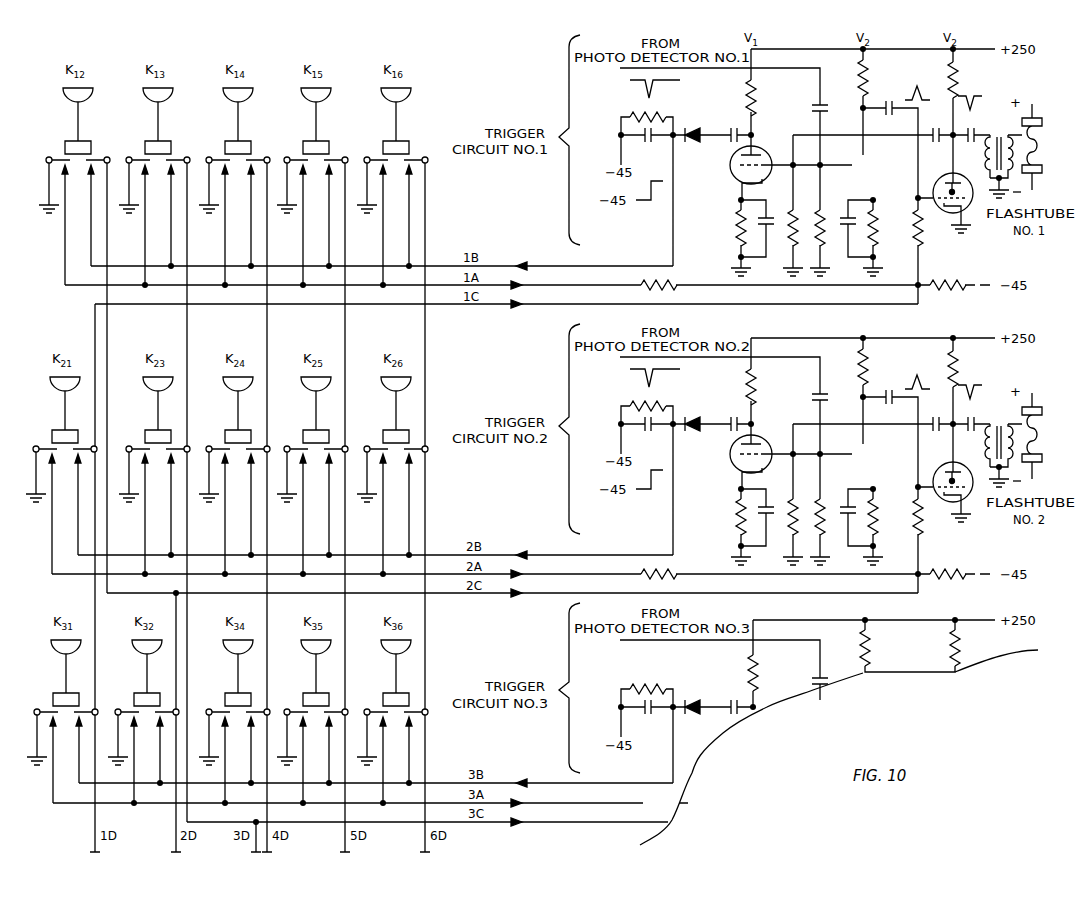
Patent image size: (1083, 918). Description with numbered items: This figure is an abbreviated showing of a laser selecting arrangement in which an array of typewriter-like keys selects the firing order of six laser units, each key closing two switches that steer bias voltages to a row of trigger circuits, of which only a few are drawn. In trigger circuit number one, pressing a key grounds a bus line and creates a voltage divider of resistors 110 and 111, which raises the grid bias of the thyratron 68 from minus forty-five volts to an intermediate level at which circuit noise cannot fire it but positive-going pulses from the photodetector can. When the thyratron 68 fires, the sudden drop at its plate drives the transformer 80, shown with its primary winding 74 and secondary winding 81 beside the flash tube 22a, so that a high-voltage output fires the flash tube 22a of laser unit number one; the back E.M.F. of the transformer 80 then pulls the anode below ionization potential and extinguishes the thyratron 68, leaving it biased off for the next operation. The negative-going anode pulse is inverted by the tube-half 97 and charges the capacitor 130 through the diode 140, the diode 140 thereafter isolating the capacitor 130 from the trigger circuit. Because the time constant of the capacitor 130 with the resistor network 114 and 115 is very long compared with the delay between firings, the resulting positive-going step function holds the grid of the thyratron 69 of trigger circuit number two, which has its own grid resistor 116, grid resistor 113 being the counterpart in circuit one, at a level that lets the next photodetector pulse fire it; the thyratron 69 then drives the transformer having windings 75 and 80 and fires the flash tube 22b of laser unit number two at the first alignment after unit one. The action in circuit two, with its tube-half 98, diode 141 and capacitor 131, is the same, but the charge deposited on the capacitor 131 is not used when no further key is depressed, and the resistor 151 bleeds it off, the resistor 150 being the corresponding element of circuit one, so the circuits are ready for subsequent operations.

The tube-half 97 is at (754, 164).
The first triode of trigger circuit no.2 98 is at (754, 453).
The thyratron 68 is at (950, 191).
The thyratron 69 is at (950, 480).
The trigger transformer primary no.1 74 is at (982, 156).
The trigger transformer primary no.2 75 is at (982, 445).
The transformer 80 is at (1006, 146).
The trigger transformer secondary no.2 81 is at (1006, 435).
The flash tube 22a is at (1044, 147).
The flash tube 22b is at (1044, 436).
The resistor 110 is at (659, 292).
The resistor 111 is at (948, 276).
The grid resistor of thyratron 68 113 is at (932, 230).
The resistor 114 is at (659, 581).
The resistor 115 is at (948, 565).
The grid resistor of thyratron 69 116 is at (932, 519).
The capacitor 130 is at (651, 144).
The capacitor 131 is at (651, 433).
The diode 140 is at (697, 126).
The diode (circuit 2) 141 is at (697, 415).
The resistor across capacitor 130 150 is at (647, 114).
The resistor 151 is at (647, 403).